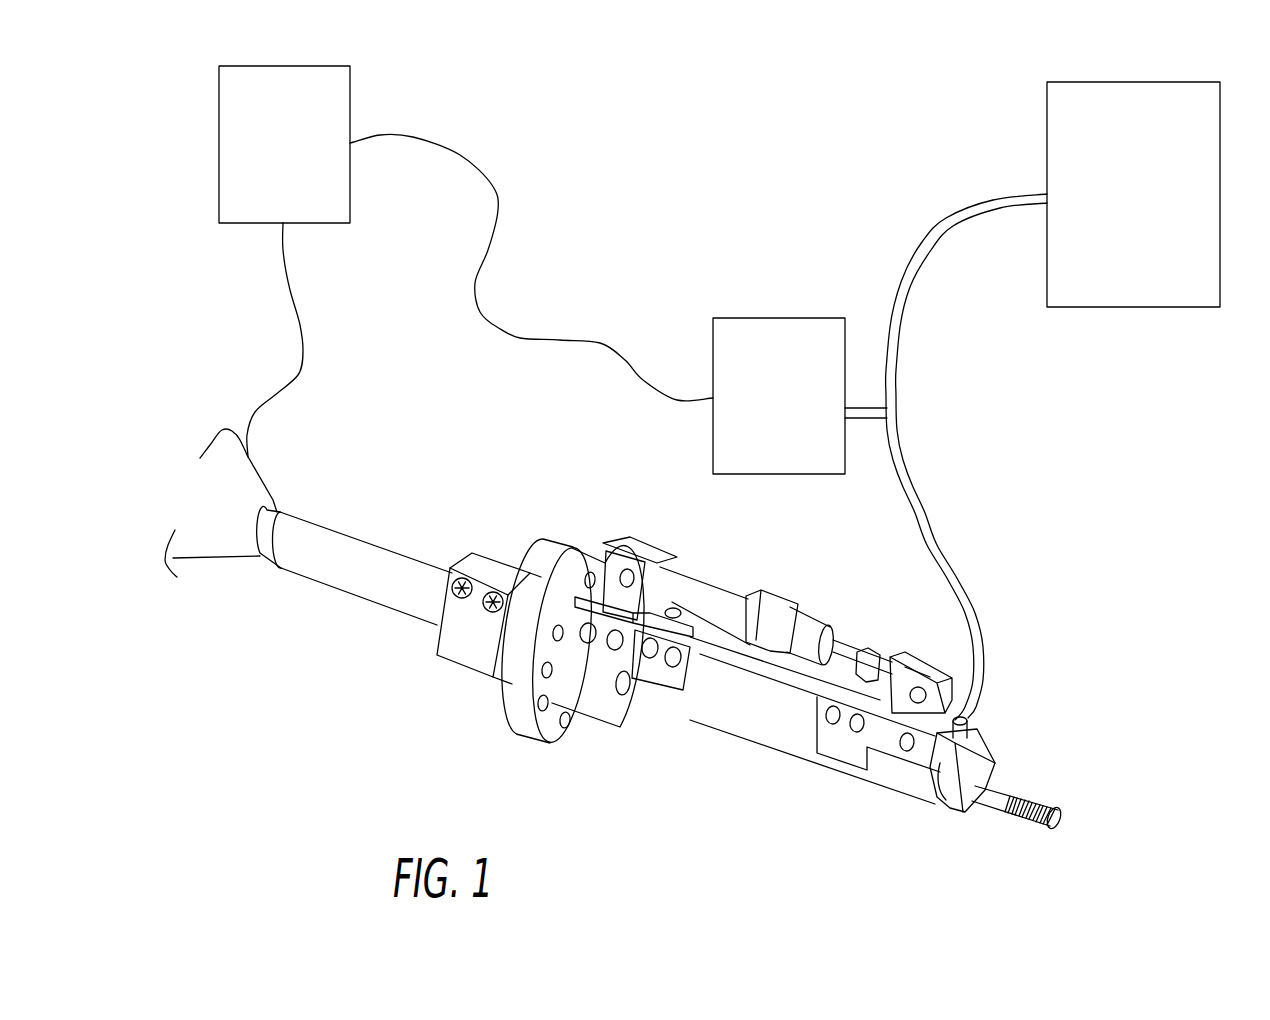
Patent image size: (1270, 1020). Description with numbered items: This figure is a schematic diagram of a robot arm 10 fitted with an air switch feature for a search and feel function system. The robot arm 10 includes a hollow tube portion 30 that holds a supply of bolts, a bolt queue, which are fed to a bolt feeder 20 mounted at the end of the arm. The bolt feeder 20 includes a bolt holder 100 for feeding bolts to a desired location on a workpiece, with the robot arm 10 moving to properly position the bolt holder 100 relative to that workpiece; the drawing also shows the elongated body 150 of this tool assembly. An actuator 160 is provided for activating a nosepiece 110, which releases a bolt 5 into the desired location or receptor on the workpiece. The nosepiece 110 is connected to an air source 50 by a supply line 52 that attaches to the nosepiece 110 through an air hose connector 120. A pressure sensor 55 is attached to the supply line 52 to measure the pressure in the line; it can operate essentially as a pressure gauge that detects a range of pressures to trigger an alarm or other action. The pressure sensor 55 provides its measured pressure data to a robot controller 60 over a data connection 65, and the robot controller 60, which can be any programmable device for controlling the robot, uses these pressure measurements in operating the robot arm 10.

The bolt 5 is at (1040, 800).
The robot arm 10 is at (427, 516).
The bolt feeder 20 is at (583, 732).
The hollow tube portion 30 is at (368, 555).
The air source 50 is at (1195, 82).
The supply line 52 is at (918, 506).
The pressure sensor 55 is at (813, 318).
The robot controller 60 is at (325, 64).
The data connection 65 is at (450, 148).
The bolt holder 100 is at (821, 726).
The nosepiece 110 is at (969, 837).
The air hose connector 120 is at (968, 718).
The tool body 150 is at (763, 732).
The actuator 160 is at (830, 610).